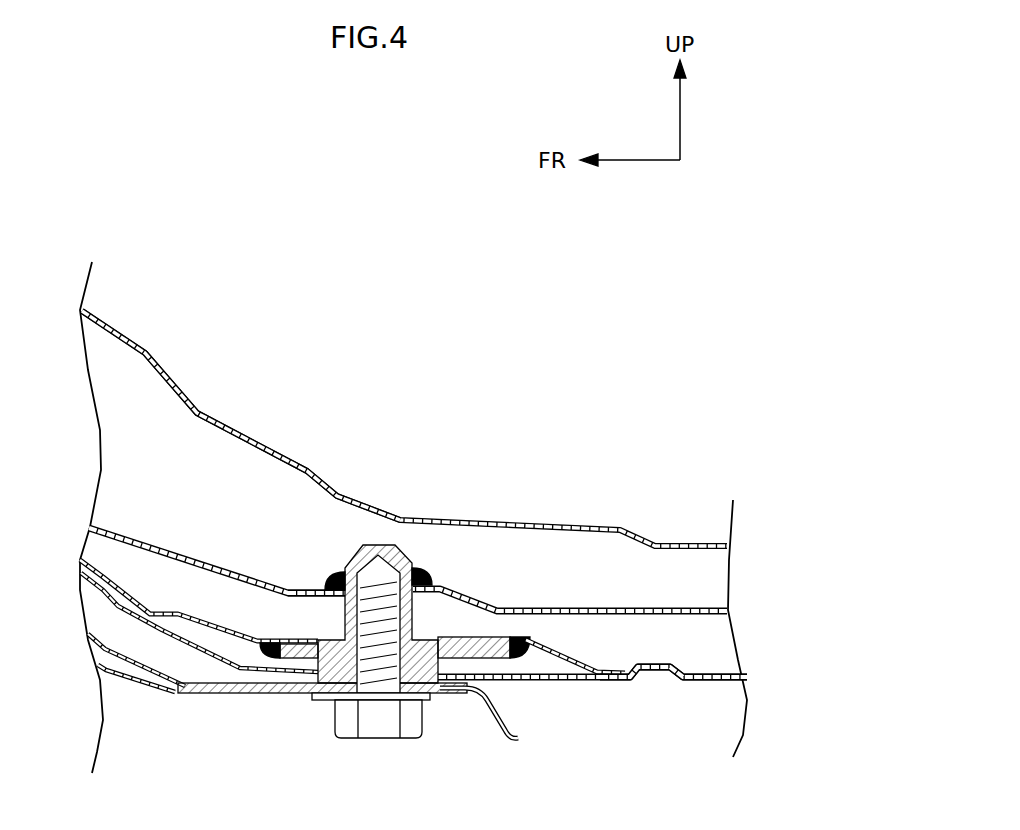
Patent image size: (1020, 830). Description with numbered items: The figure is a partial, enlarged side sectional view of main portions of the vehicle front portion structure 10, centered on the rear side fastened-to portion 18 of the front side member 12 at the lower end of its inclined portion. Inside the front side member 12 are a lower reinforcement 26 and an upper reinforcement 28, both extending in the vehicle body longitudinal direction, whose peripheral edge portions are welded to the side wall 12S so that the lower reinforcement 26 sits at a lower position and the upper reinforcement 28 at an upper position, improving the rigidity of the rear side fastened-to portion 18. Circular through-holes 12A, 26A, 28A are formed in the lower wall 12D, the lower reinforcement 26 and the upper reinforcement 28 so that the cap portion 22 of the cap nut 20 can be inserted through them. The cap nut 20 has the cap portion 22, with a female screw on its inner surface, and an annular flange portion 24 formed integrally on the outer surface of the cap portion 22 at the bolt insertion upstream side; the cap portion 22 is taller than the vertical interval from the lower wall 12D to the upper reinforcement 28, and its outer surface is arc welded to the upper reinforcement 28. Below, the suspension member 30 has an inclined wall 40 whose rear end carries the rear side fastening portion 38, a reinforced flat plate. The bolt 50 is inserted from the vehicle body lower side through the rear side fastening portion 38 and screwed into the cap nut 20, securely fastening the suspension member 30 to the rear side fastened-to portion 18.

The vehicle front portion structure 10 is at (404, 379).
The front side member 12 is at (572, 520).
The side wall 12S is at (172, 433).
The through-hole 12A is at (322, 698).
The lower wall 12D is at (672, 684).
The rear side fastened-to portion 18 is at (505, 684).
The cap nut 20 is at (413, 543).
The cap portion 22 is at (346, 618).
The flange portion 24 is at (538, 620).
The lower reinforcement 26 is at (580, 658).
The through-hole 26A is at (434, 633).
The upper reinforcement 28 is at (227, 568).
The through-hole 28A is at (340, 598).
The suspension member 30 is at (180, 706).
The rear side fastening portion 38 is at (518, 728).
The inclined wall 40 is at (100, 628).
The bolt 50 is at (385, 716).